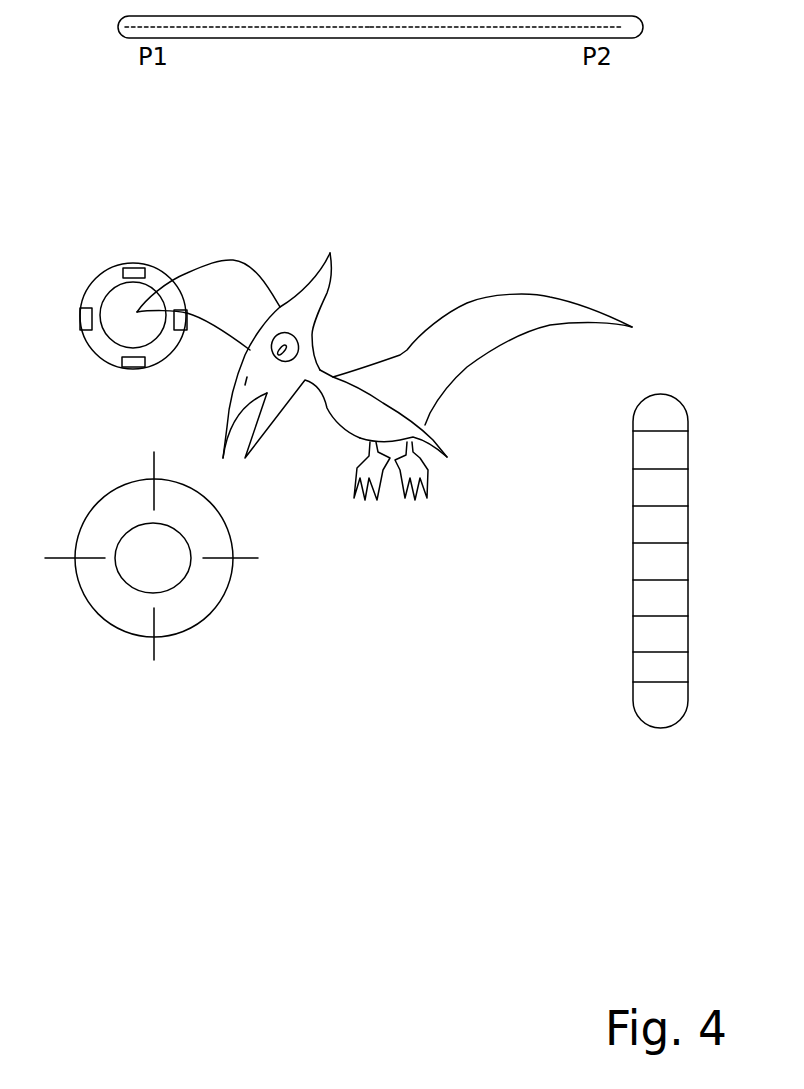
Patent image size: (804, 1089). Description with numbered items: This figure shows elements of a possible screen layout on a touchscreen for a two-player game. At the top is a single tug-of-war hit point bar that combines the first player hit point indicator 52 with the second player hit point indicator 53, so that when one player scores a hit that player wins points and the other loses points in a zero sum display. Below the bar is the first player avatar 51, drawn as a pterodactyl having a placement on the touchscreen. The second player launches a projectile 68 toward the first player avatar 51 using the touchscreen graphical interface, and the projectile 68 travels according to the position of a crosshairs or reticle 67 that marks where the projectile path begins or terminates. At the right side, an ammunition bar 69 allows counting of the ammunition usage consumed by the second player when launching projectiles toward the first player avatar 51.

The first player avatar 51 is at (243, 247).
The first player hit point indicator 52 is at (245, 42).
The second player hit point indicator 53 is at (497, 42).
The reticle 67 is at (188, 608).
The projectile 68 is at (100, 287).
The ammunition bar 69 is at (698, 548).